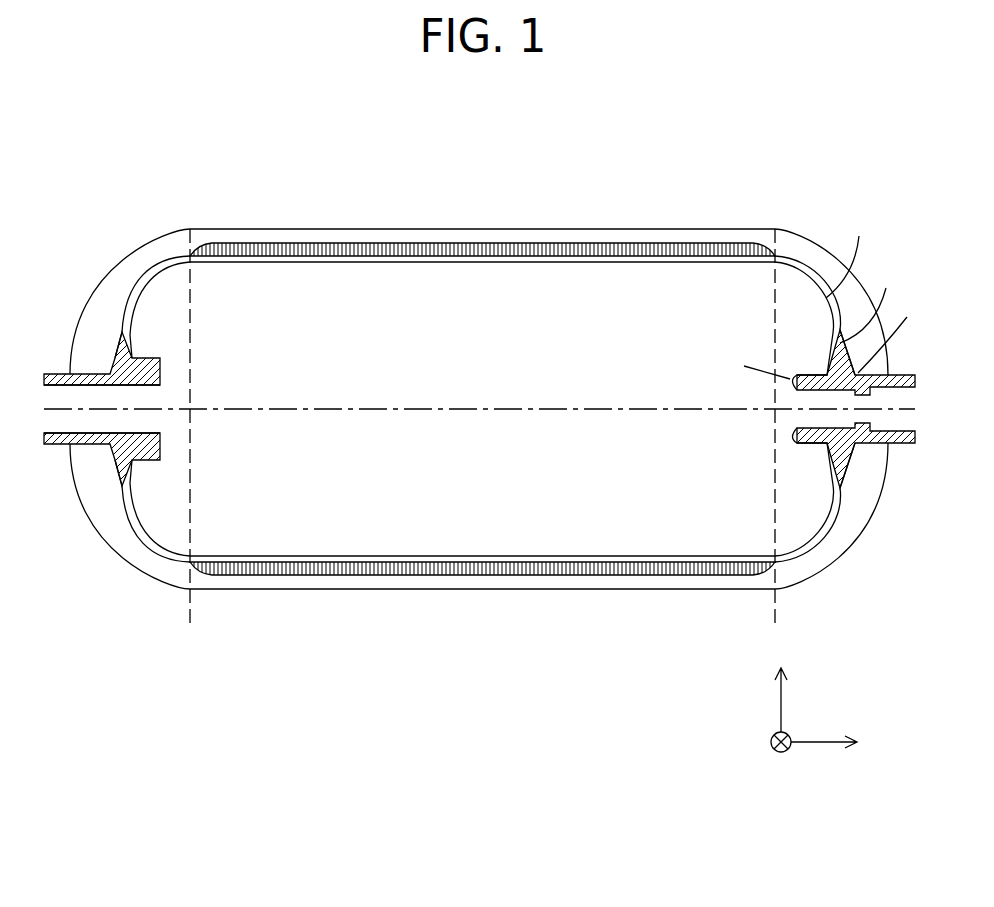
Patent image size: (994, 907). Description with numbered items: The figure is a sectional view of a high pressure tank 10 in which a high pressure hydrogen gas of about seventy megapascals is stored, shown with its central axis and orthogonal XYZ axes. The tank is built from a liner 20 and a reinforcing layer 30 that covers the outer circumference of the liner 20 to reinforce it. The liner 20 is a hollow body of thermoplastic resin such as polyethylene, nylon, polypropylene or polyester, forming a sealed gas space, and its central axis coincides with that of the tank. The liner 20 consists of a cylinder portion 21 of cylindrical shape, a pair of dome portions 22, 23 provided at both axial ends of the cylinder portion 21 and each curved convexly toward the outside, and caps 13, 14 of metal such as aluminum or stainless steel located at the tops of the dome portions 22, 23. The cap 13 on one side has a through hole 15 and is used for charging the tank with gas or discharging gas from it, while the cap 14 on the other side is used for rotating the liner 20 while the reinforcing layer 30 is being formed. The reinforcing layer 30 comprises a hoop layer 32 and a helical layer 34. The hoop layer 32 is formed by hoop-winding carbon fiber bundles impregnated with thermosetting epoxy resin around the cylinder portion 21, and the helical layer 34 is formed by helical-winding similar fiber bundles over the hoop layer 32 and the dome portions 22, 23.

The high pressure tank 10 is at (815, 165).
The cap 13 is at (93, 436).
The cap 14 is at (863, 443).
The through hole 15 is at (102, 387).
The liner 20 is at (577, 264).
The cylinder portion 21 is at (192, 596).
The dome portion 22 is at (143, 535).
The dome portion 23 is at (810, 543).
The reinforcing layer 30 is at (408, 172).
The hoop layer 32 is at (487, 250).
The helical layer 34 is at (424, 237).